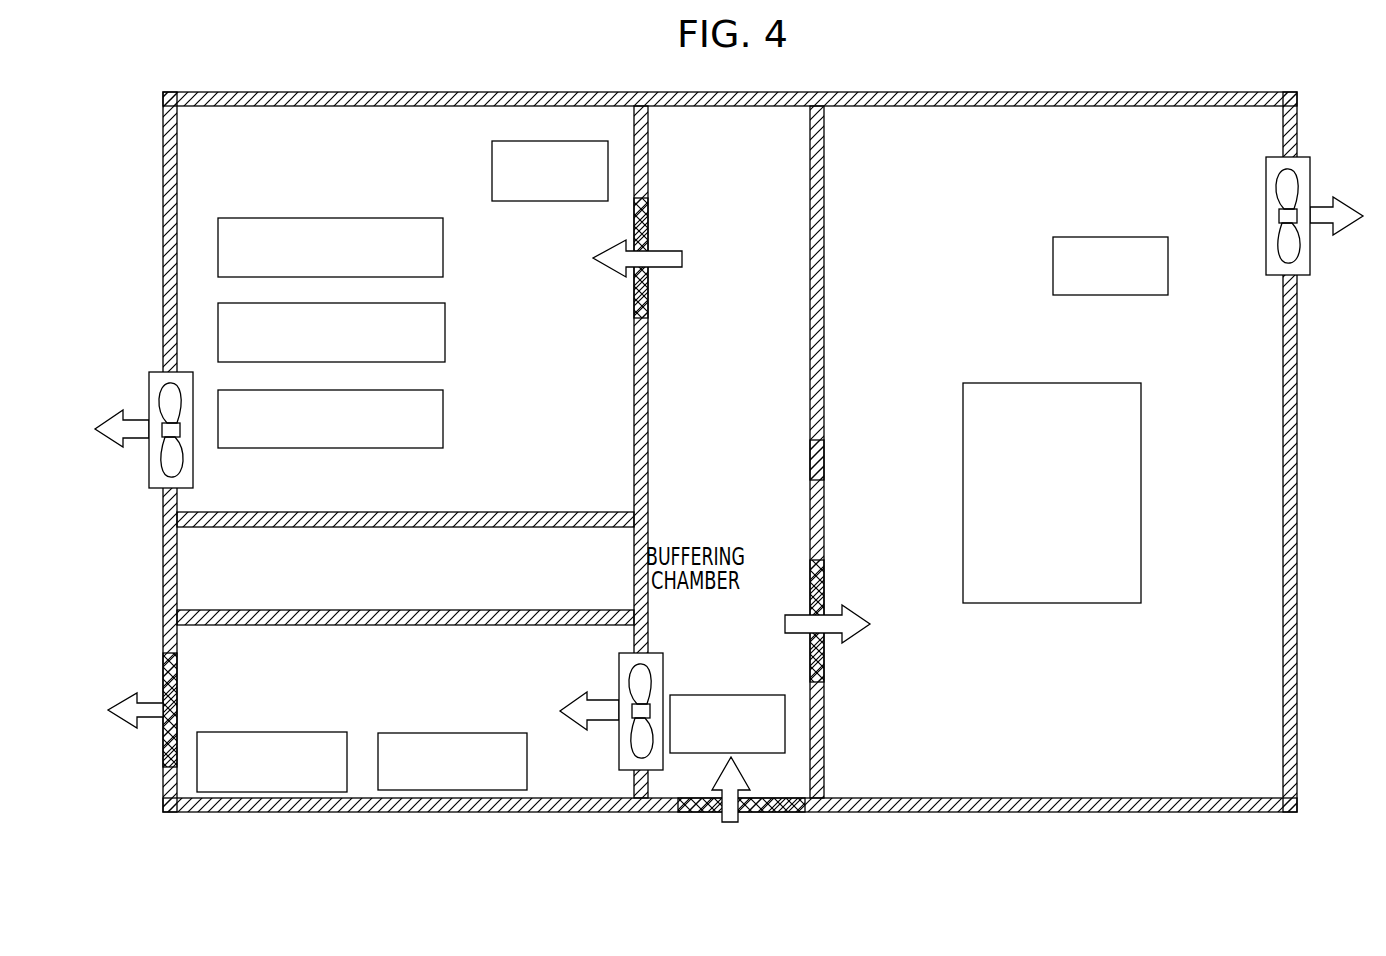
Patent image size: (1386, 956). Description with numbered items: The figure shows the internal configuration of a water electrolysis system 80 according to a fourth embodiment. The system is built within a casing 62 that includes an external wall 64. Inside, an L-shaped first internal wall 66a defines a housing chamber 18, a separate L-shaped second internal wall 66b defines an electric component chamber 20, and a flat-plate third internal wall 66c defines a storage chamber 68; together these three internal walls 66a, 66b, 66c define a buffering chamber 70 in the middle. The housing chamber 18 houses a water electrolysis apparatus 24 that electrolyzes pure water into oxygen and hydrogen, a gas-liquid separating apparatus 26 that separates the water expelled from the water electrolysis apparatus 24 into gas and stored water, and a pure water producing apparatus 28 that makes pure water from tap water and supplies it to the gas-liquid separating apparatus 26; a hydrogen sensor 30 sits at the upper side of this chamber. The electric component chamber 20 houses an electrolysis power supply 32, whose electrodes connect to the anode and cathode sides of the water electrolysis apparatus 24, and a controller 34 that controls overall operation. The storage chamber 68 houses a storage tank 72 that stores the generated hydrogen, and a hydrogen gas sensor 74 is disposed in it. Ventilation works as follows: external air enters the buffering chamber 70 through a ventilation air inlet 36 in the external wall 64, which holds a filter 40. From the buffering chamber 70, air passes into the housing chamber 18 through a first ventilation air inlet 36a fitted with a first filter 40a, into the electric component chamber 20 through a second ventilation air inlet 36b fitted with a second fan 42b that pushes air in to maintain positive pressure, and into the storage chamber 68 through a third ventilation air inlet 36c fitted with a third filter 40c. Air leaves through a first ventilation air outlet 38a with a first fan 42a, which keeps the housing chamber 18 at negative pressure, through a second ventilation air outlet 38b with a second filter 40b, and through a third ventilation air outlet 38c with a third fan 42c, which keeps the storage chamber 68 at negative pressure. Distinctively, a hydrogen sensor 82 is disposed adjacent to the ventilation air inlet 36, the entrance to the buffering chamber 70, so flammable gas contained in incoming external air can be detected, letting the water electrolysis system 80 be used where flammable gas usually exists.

The water electrolysis system 80 is at (421, 62).
The housing chamber 18 is at (585, 115).
The storage chamber 68 is at (905, 115).
The casing 62 is at (1308, 120).
The external wall 64 is at (1297, 312).
The first internal wall 66a is at (648, 455).
The second internal wall 66b is at (437, 612).
The third internal wall 66c is at (824, 455).
The buffering chamber 70 is at (802, 410).
The electric component chamber 20 is at (222, 628).
The water electrolysis apparatus 24 is at (445, 242).
The gas-liquid separating apparatus 26 is at (445, 328).
The pure water producing apparatus 28 is at (445, 414).
The hydrogen sensor 30 is at (551, 201).
The electrolysis power supply 32 is at (270, 731).
The controller 34 is at (450, 732).
The ventilation air inlet 36 is at (772, 812).
The first ventilation air inlet 36a is at (648, 312).
The second ventilation air inlet 36b is at (635, 768).
The third ventilation air inlet 36c is at (824, 676).
The first ventilation air outlet 38a is at (170, 487).
The second ventilation air outlet 38b is at (163, 763).
The third ventilation air outlet 38c is at (1290, 272).
The filter 40 is at (696, 812).
The first filter 40a is at (648, 218).
The second filter 40b is at (163, 675).
The third filter 40c is at (824, 586).
The first fan 42a is at (149, 396).
The second fan 42b is at (656, 653).
The third fan 42c is at (1266, 172).
The storage tank 72 is at (1141, 485).
The hydrogen gas sensor 74 is at (1110, 297).
The hydrogen sensor 82 is at (727, 695).